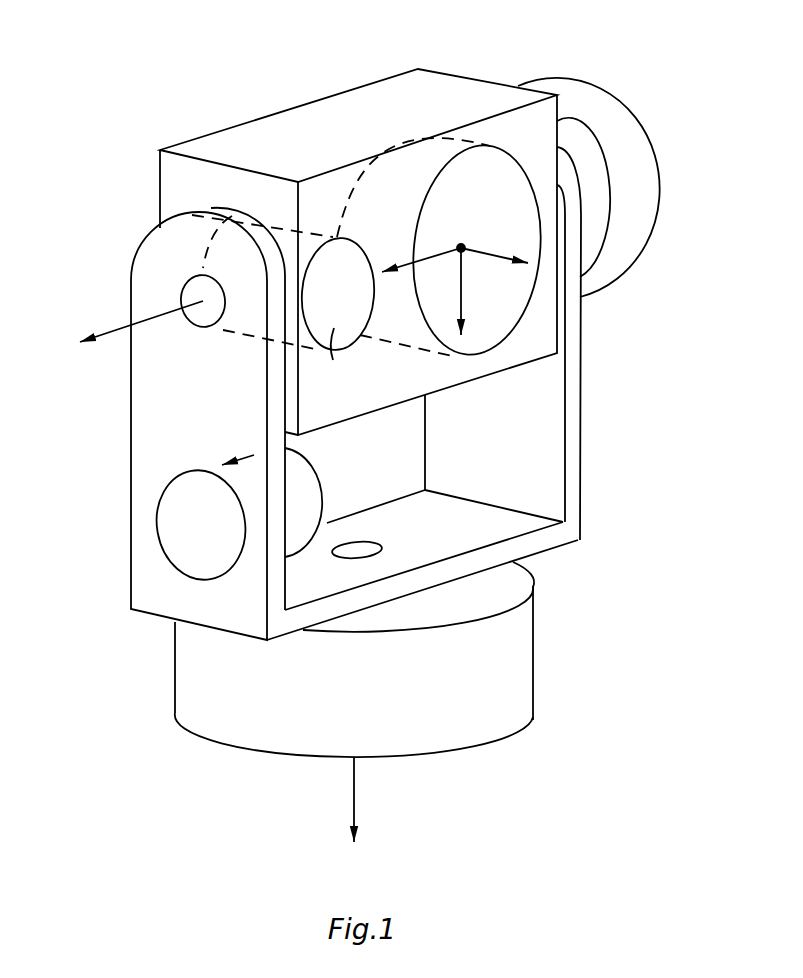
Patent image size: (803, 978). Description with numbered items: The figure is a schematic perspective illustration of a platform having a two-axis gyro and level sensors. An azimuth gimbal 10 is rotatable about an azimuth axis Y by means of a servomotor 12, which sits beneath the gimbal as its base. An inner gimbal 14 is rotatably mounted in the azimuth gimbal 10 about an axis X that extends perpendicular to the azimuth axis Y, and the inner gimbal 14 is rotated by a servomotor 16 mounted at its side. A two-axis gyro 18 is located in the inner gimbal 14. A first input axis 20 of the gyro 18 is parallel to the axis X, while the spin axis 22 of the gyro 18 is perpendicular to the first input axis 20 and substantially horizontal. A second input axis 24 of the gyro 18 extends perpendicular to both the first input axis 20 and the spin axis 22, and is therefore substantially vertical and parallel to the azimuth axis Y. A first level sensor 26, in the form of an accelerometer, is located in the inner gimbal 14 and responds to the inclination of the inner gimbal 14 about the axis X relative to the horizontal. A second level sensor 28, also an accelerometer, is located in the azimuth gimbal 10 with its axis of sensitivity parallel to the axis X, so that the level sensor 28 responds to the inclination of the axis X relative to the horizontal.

The azimuth gimbal 10 is at (151, 592).
The servomotor 12 is at (218, 710).
The inner gimbal 14 is at (276, 130).
The servomotor 16 is at (604, 117).
The two-axis gyro 18 is at (505, 303).
The first input axis 20 is at (461, 248).
The spin axis 22 is at (495, 262).
The second input axis 24 is at (462, 287).
The first level sensor 26 is at (332, 360).
The second level sensor 28 is at (180, 525).